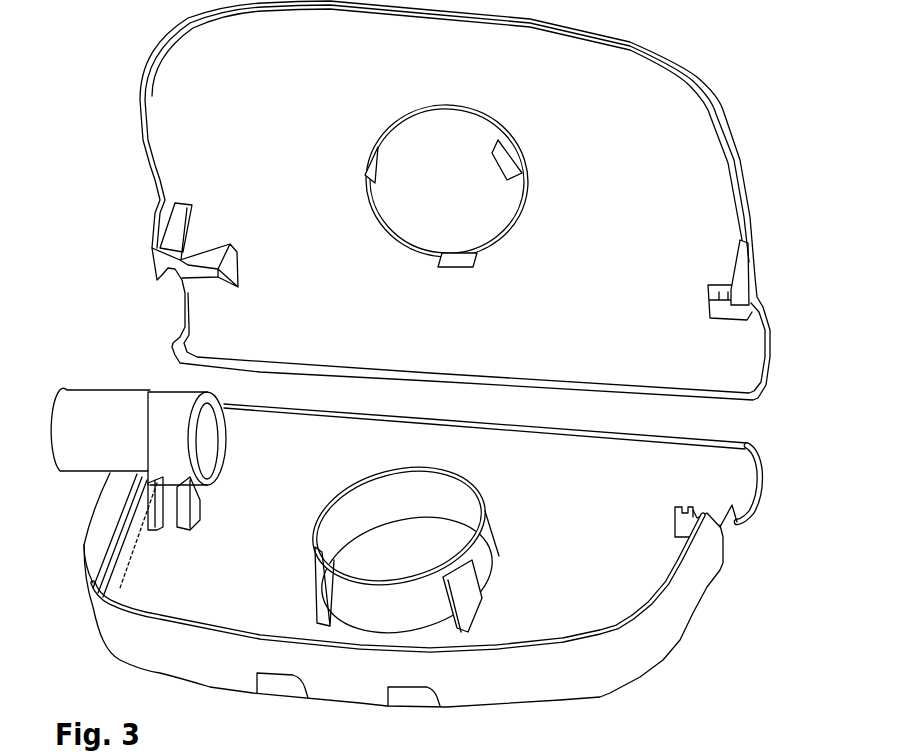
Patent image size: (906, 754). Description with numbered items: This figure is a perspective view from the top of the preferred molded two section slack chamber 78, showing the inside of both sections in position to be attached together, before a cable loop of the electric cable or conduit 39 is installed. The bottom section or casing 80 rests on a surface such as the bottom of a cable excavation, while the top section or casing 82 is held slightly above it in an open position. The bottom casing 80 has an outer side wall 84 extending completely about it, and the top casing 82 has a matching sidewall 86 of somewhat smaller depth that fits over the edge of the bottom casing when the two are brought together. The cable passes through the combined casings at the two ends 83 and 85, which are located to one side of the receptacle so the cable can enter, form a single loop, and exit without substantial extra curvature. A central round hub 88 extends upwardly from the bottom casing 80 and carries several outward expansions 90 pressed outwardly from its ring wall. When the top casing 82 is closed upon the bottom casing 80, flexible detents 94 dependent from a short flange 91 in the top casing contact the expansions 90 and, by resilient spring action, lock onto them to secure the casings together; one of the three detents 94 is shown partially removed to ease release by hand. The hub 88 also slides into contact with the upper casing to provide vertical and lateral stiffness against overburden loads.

The slack chamber receptacle 78 is at (414, 377).
The bottom section or casing 80 is at (414, 569).
The top section or casing 82 is at (464, 377).
The end of the combined casings 83 is at (70, 442).
The outer side wall 84 is at (593, 672).
The end of the combined casings 85 is at (747, 473).
The sidewall of top casing 86 is at (740, 173).
The central hub 88 is at (425, 572).
The outward expansions 90 is at (467, 602).
The short flange 91 is at (474, 151).
The flexible detents 94 is at (507, 157).
The electric cable or conduit 39 is at (770, 748).